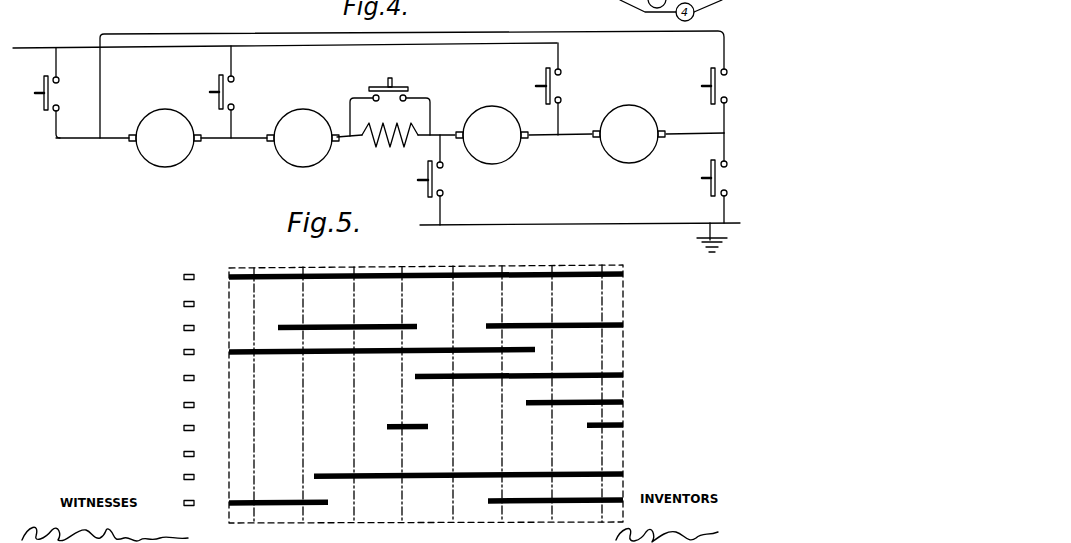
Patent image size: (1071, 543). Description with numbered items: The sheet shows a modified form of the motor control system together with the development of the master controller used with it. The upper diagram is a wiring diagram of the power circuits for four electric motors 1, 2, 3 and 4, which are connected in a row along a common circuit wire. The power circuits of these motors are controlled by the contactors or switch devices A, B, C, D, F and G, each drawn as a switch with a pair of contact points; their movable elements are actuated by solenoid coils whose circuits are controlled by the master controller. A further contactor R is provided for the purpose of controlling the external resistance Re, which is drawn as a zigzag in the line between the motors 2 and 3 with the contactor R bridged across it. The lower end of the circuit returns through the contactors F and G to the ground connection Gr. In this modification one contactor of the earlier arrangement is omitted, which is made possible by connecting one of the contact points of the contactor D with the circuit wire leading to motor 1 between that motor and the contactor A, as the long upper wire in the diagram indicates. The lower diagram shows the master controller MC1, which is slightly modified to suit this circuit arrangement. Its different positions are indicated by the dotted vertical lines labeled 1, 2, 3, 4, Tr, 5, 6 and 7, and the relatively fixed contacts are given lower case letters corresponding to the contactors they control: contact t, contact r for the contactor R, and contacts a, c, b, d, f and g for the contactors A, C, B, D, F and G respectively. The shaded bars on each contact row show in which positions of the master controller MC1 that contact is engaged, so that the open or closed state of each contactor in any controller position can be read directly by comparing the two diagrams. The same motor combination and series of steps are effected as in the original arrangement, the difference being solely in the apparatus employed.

In FIG. 4, the contactor A is at (55, 93).
In FIG. 4, the contactor B is at (229, 92).
In FIG. 4, the contactor C is at (556, 89).
In FIG. 4, the contactor D is at (721, 100).
In FIG. 4, the contactor F is at (437, 180).
In FIG. 4, the contactor G is at (722, 178).
In FIG. 4, the contactor R is at (390, 107).
In FIG. 4, the external resistance Re is at (390, 146).
In FIG. 4, the ground connection Gr is at (726, 238).
In FIG. 4, the electric motor 1 is at (165, 138).
In FIG. 5, the electric motor 1 is at (252, 384).
In FIG. 4, the electric motor 2 is at (303, 138).
In FIG. 5, the electric motor 2 is at (302, 384).
In FIG. 4, the electric motor 3 is at (492, 135).
In FIG. 5, the electric motor 3 is at (352, 384).
In FIG. 4, the electric motor 4 is at (629, 134).
In FIG. 5, the electric motor 4 is at (401, 383).
In FIG. 5, the master controller position 5 is at (501, 383).
In FIG. 5, the master controller position 6 is at (551, 383).
In FIG. 5, the master controller position 7 is at (600, 383).
In FIG. 5, the master controller position Tr is at (447, 383).
In FIG. 5, the master controller MC1 is at (592, 352).
In FIG. 5, the master controller fixed contact t is at (393, 277).
In FIG. 5, the master controller fixed contact r is at (393, 327).
In FIG. 5, the master controller fixed contact a is at (347, 352).
In FIG. 5, the master controller fixed contact c is at (392, 378).
In FIG. 5, the master controller fixed contact b is at (392, 405).
In FIG. 5, the master controller fixed contact d is at (391, 428).
In FIG. 5, the master controller fixed contact f is at (391, 477).
In FIG. 5, the master controller fixed contact g is at (392, 503).